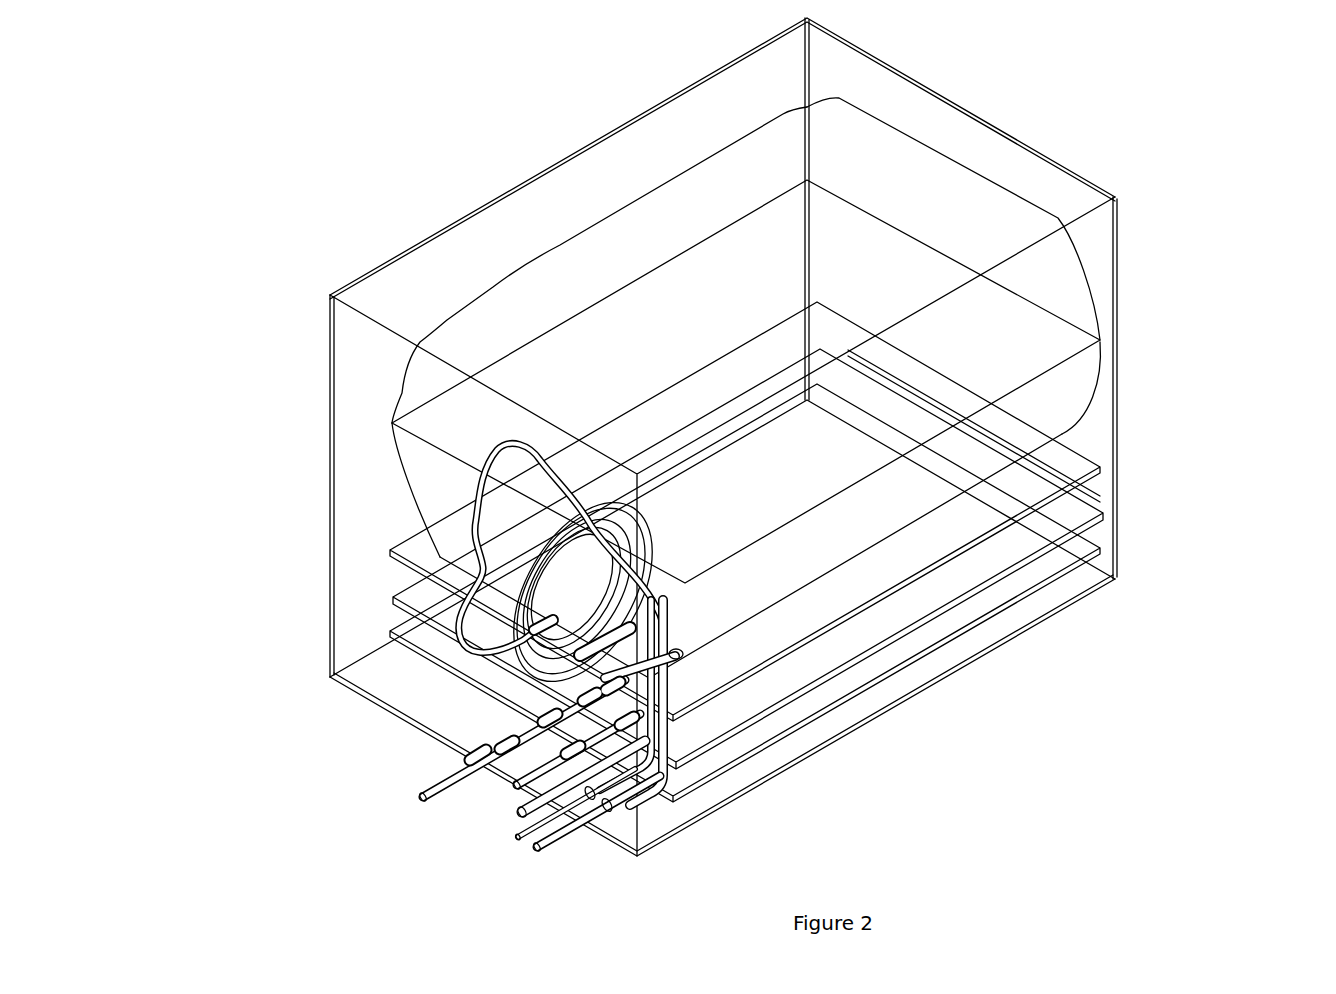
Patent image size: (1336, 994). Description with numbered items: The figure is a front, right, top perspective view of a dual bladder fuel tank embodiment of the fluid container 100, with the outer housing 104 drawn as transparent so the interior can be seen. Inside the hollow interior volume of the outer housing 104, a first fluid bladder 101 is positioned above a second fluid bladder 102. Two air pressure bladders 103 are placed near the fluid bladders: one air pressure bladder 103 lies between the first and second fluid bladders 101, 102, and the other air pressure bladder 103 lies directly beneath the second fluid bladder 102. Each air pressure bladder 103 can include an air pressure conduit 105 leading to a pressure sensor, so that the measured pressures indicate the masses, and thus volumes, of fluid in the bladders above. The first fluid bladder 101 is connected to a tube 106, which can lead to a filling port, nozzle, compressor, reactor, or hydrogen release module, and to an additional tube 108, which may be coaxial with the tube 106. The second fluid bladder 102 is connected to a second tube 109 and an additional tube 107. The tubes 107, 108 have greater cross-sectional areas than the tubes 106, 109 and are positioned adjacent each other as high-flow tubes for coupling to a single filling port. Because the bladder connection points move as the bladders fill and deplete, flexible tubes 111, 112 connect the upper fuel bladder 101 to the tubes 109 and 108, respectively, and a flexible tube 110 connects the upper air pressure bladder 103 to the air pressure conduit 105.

The fluid container 100 is at (735, 459).
The first fluid bladder 101 is at (1047, 278).
The second fluid bladder 102 is at (1083, 513).
The air pressure bladder 103 is at (1083, 460).
The outer housing 104 is at (872, 80).
The air pressure conduit 105 is at (478, 755).
The tube 106 is at (420, 793).
The tube 107 is at (515, 793).
The tube 108 is at (520, 814).
The second tube 109 is at (562, 838).
The flexible tube 110 is at (490, 458).
The flexible tube 111 is at (640, 603).
The flexible tube 112 is at (667, 718).